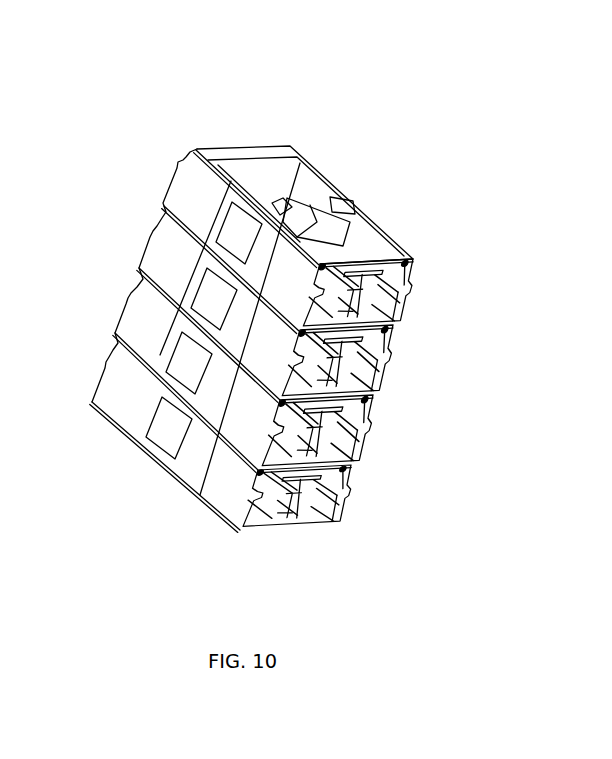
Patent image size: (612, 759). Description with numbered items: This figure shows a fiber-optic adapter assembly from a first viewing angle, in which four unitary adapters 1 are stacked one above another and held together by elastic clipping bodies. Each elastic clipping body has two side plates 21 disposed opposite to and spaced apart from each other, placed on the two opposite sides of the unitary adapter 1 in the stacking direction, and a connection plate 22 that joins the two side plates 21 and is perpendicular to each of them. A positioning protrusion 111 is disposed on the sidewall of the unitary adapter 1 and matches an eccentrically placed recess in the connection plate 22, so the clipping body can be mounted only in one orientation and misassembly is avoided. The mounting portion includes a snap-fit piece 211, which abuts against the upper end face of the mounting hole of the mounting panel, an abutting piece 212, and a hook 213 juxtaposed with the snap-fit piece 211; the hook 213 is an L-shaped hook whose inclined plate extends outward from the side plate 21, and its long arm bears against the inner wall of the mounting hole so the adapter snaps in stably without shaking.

The unitary adapter 1 is at (238, 176).
The side plate 21 is at (300, 163).
The snap-fit piece 211 is at (305, 210).
The abutting piece 212 is at (325, 205).
The hook 213 is at (352, 200).
The connection plate 22 is at (218, 370).
The positioning protrusion 111 is at (166, 437).